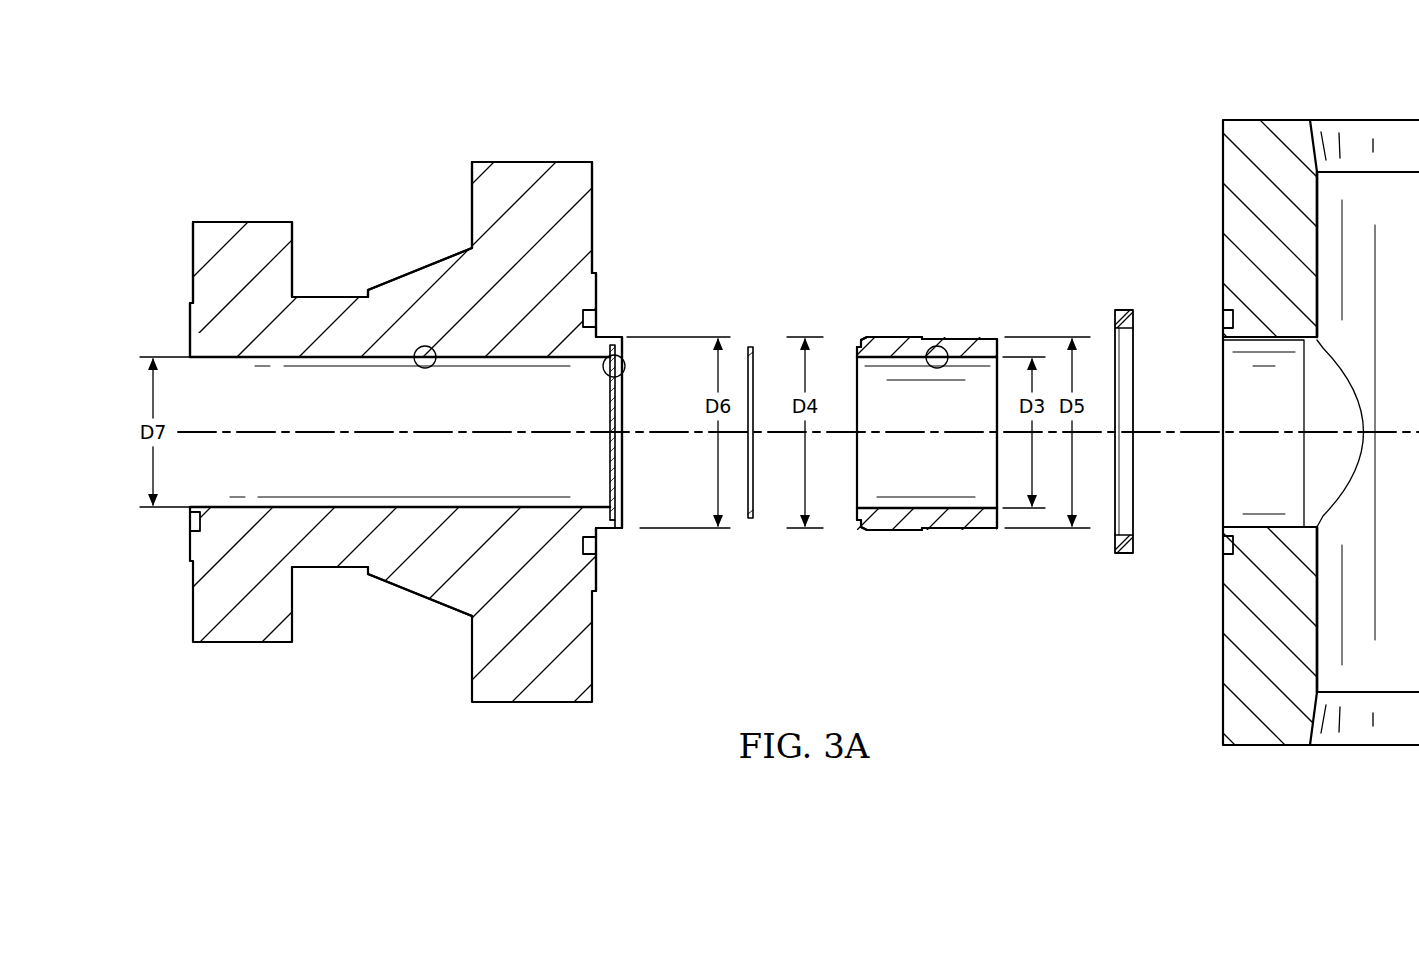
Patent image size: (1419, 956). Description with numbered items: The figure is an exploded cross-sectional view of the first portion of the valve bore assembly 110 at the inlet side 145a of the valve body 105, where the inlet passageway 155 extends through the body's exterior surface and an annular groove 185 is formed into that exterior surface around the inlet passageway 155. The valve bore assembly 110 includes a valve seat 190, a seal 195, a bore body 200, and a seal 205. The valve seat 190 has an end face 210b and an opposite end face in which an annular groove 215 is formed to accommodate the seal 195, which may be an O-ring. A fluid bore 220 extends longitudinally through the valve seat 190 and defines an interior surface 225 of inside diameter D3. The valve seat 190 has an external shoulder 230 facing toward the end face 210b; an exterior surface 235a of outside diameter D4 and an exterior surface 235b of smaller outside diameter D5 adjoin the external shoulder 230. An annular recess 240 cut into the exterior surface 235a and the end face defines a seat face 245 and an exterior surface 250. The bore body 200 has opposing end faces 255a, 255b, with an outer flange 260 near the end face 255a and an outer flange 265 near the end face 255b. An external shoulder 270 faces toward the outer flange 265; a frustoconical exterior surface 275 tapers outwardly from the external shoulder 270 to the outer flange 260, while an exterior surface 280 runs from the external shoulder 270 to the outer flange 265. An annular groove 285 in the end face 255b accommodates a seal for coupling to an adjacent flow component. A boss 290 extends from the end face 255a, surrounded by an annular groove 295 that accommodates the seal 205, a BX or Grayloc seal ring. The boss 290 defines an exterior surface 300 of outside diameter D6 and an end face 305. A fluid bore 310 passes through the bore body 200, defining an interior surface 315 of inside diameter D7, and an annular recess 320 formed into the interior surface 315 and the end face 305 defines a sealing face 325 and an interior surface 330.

The valve body 105 is at (1232, 664).
The valve bore assembly 110 is at (707, 84).
The inlet side 145a is at (1213, 203).
The inlet passageway 155 is at (1242, 404).
The annular groove 185 is at (1224, 318).
The valve seat 190 is at (965, 284).
The seal 195 is at (751, 520).
The bore body 200 is at (345, 118).
The seal 205 is at (1124, 310).
The end face 210b is at (1000, 530).
The annular groove 215 is at (858, 343).
The fluid bore 220 is at (904, 479).
The interior surface 225 is at (957, 349).
The external shoulder 230 is at (921, 336).
The exterior surface 235a is at (893, 532).
The exterior surface 235b is at (963, 531).
The annular recess 240 is at (857, 335).
The seat face 245 is at (864, 532).
The exterior surface 250 is at (858, 532).
The end face 255a is at (598, 292).
The end face 255b is at (190, 318).
The outer flange 260 is at (523, 160).
The outer flange 265 is at (222, 220).
The external shoulder 270 is at (366, 294).
The exterior surface 275 is at (411, 597).
The exterior surface 280 is at (320, 570).
The annular groove 285 is at (192, 522).
The boss 290 is at (614, 334).
The annular groove 295 is at (583, 546).
The exterior surface 300 is at (600, 540).
The end face 305 is at (617, 531).
The fluid bore 310 is at (381, 479).
The interior surface 315 is at (432, 346).
The annular recess 320 is at (618, 476).
The sealing face 325 is at (603, 372).
The interior surface 330 is at (618, 522).